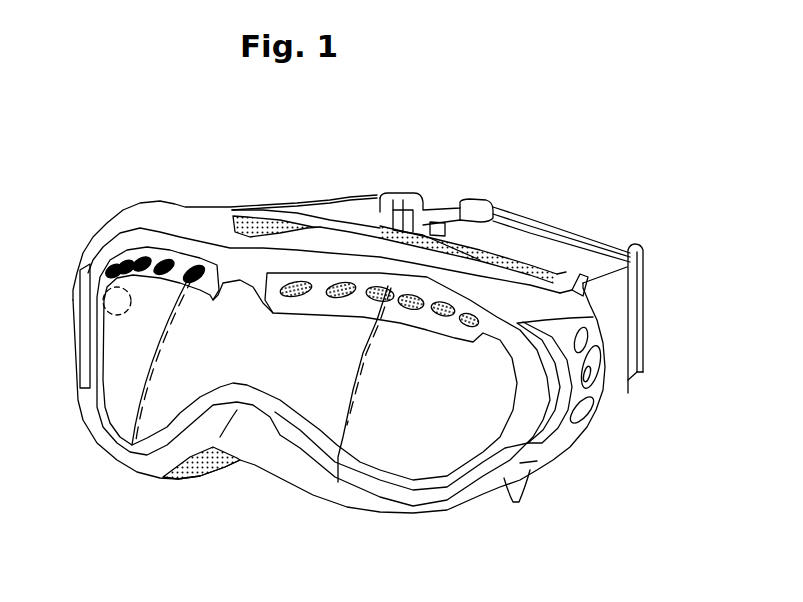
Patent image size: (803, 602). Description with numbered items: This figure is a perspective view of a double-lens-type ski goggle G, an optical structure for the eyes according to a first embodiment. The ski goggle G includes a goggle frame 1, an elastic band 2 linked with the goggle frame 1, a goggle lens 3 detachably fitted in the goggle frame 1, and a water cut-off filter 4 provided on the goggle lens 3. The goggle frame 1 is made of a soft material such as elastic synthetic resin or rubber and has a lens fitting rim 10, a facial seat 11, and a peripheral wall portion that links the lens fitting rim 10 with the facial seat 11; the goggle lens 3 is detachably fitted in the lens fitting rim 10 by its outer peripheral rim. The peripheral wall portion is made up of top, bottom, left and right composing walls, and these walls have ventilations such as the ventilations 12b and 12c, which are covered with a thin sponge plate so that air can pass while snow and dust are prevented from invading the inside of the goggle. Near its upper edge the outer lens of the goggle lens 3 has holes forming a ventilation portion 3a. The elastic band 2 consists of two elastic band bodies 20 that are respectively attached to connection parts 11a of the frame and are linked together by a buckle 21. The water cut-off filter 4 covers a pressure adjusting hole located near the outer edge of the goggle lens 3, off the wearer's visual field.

The ski goggle G is at (215, 160).
The goggle frame 1 is at (552, 468).
The elastic band 2 is at (615, 314).
The goggle lens 3 is at (413, 450).
The ventilation portion 3a is at (193, 270).
The water cut-off filter 4 is at (103, 290).
The lens fitting rim 10 is at (93, 413).
The facial seat 11 is at (255, 212).
The connection part 11a is at (569, 290).
The ventilation 12b is at (501, 476).
The ventilation 12c is at (578, 422).
The band body 20 is at (321, 198).
The buckle 21 is at (445, 197).